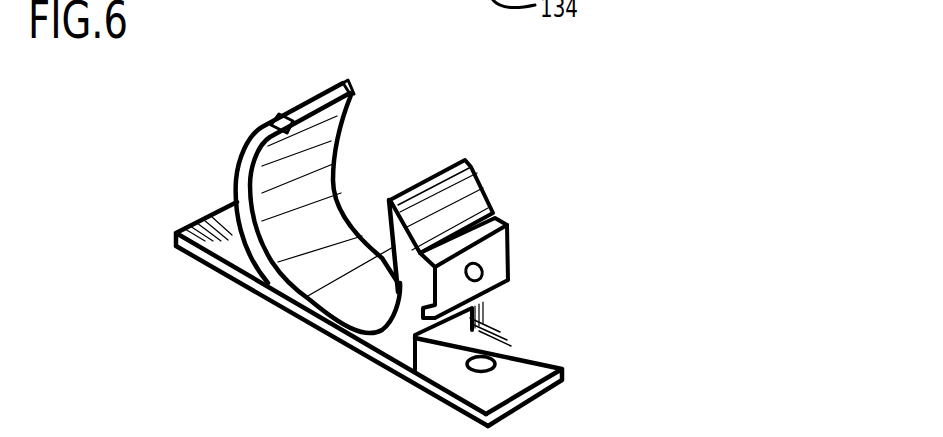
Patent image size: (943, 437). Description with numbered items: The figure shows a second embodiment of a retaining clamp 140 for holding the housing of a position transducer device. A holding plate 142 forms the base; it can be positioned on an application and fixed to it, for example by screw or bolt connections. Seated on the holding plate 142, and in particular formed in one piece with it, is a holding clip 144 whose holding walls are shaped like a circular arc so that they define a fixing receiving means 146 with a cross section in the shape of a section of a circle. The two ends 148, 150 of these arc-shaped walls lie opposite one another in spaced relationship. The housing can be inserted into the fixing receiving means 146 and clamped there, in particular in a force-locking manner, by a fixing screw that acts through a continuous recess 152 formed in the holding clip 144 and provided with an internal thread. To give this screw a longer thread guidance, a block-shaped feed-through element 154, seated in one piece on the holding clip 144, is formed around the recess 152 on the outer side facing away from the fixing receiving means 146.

The retaining clamp 140 is at (522, 203).
The holding plate 142 is at (528, 393).
The holding clip 144 is at (283, 118).
The fixing receiving means 146 is at (348, 252).
The end 148 is at (395, 80).
The end 150 is at (455, 160).
The continuous recess 152 is at (485, 274).
The block-shaped feed-through element 154 is at (497, 251).